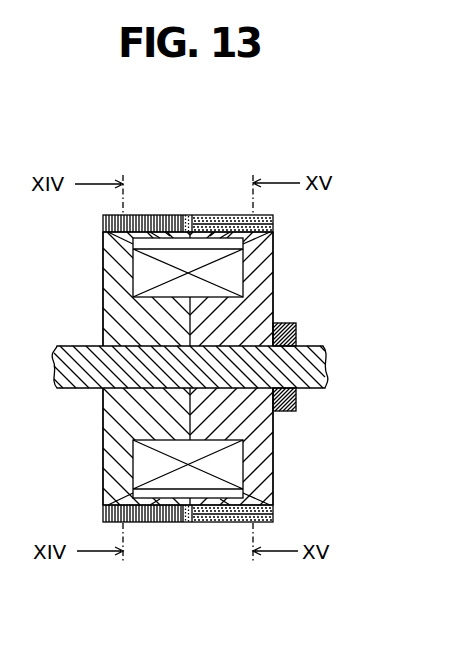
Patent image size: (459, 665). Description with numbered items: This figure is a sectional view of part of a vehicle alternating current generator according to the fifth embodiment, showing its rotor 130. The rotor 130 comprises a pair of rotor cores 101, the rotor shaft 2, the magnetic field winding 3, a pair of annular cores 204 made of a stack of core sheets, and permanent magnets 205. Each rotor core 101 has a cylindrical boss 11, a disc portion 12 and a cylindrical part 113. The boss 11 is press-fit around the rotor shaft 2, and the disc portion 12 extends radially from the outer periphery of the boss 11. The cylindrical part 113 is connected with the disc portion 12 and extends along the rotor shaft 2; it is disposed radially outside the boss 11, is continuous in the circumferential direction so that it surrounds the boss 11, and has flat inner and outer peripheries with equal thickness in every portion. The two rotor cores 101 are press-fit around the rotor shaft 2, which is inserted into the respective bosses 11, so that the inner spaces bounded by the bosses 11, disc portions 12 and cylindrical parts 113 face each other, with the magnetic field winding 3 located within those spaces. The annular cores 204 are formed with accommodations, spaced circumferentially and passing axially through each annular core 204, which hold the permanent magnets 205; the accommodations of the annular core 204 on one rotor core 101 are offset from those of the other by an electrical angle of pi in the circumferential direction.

The rotor shaft 2 is at (67, 352).
The magnetic field winding 3 is at (235, 458).
The cylindrical boss 11 is at (110, 318).
The disc portion 12 is at (108, 258).
The rotor core 101 is at (95, 290).
The cylindrical part 113 is at (160, 225).
The rotor 130 is at (319, 247).
The annular core 204 is at (166, 222).
The permanent magnet 205 is at (204, 218).